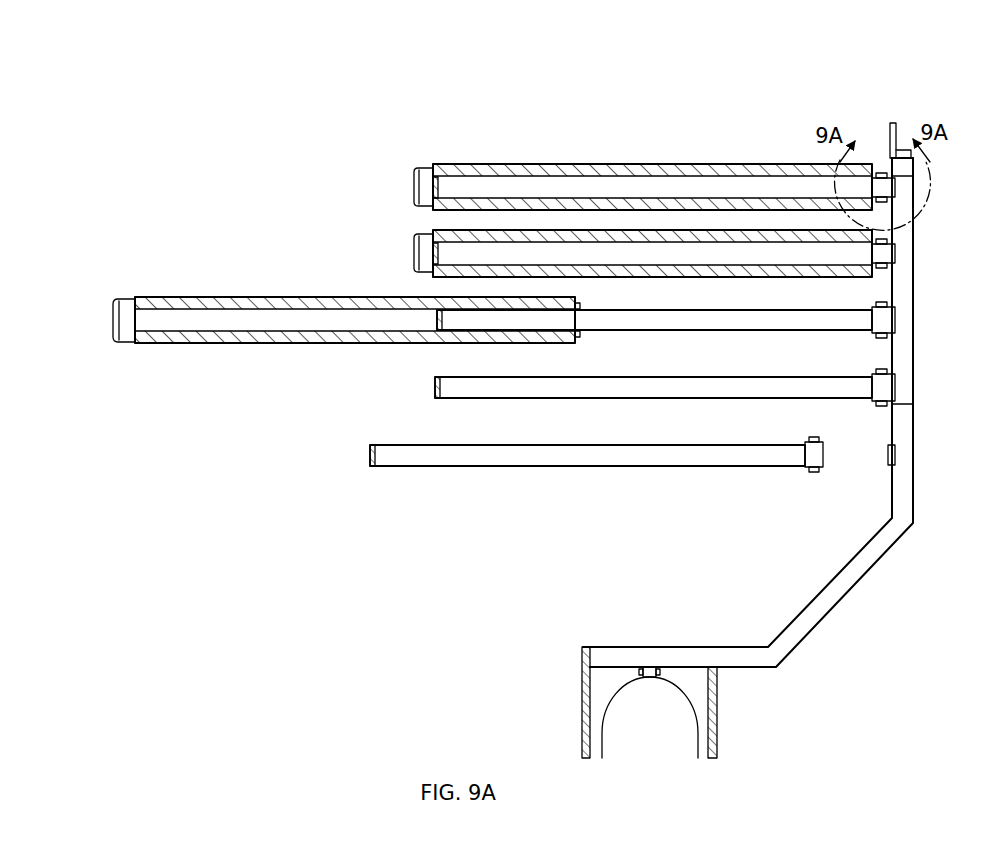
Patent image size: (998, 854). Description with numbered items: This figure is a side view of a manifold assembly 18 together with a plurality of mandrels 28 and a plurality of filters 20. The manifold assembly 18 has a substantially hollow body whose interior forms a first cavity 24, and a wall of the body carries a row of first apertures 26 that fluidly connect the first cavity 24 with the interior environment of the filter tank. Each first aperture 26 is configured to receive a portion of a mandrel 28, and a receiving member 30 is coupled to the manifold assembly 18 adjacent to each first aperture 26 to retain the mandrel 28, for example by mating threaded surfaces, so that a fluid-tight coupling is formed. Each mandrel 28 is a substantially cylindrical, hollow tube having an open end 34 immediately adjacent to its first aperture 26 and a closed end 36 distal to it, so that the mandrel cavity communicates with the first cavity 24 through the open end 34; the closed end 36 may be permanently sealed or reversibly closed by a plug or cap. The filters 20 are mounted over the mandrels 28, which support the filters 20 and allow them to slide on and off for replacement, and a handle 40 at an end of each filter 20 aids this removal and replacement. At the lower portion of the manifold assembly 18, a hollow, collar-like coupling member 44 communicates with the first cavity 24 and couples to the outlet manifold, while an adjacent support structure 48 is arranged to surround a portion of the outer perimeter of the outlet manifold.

The manifold assembly 18 is at (894, 128).
The filter 20 is at (527, 168).
The first cavity 24 is at (903, 352).
The first aperture 26 is at (899, 187).
The mandrel 28 is at (740, 190).
The receiving member 30 is at (888, 168).
The open end 34 is at (822, 469).
The closed end 36 is at (437, 318).
The handle 40 is at (414, 180).
The coupling member 44 is at (651, 680).
The support structure 48 is at (718, 702).